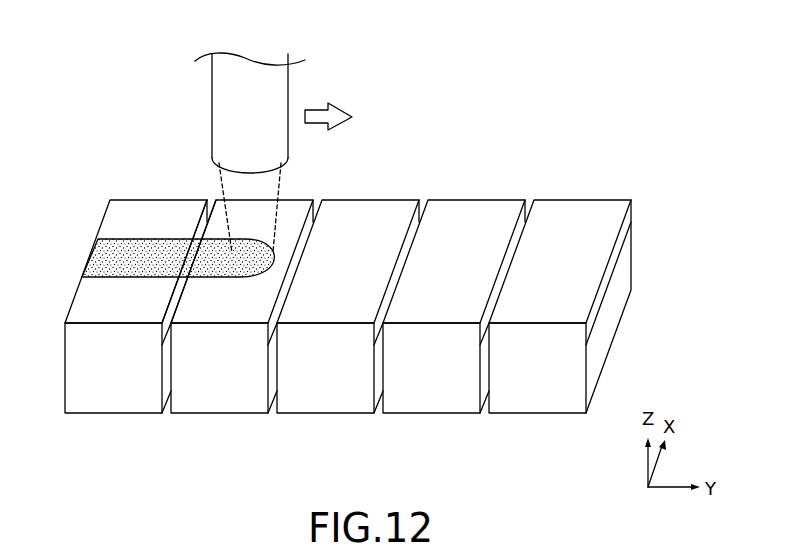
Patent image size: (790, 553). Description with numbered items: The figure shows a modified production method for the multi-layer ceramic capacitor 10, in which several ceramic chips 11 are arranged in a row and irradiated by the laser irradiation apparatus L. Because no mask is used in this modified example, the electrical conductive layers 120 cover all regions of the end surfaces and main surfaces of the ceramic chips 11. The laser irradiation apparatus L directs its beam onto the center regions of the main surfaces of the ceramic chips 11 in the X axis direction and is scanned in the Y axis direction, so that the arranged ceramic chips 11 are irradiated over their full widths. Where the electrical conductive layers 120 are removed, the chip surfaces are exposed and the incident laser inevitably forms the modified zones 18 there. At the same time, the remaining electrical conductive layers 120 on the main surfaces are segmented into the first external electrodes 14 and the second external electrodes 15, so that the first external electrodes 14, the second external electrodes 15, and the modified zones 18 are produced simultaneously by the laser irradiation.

The multi-layer ceramic capacitor 10 is at (341, 307).
The ceramic chip 11 is at (454, 290).
The first external electrode 14 is at (108, 400).
The second external electrode 15 is at (133, 213).
The modified zone 18 is at (118, 257).
The electrical conductive layer 120 is at (320, 387).
The laser irradiation apparatus L is at (240, 118).